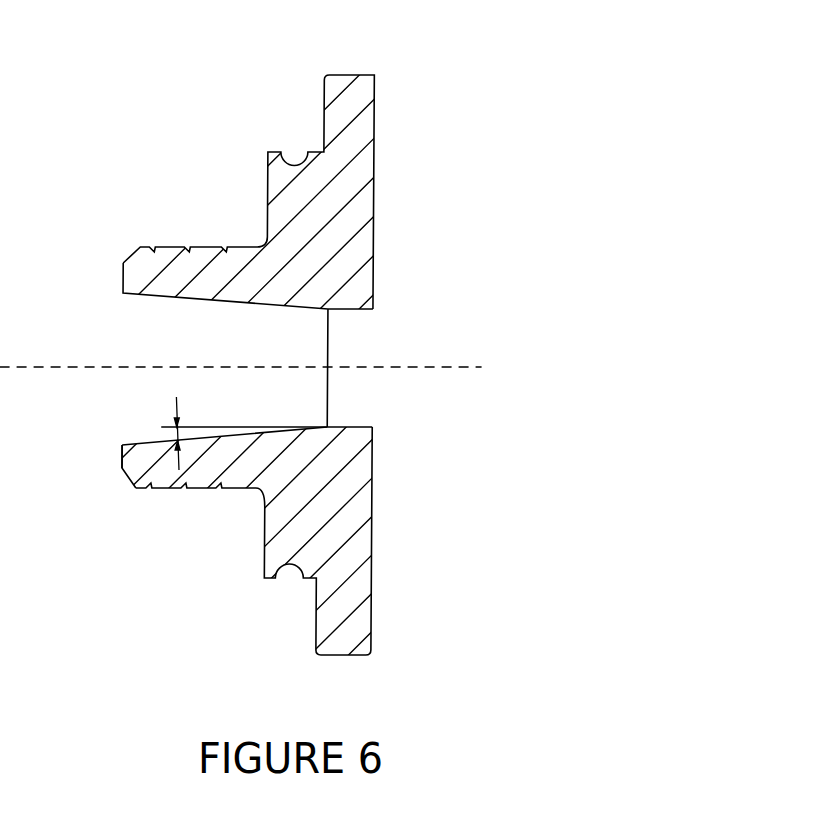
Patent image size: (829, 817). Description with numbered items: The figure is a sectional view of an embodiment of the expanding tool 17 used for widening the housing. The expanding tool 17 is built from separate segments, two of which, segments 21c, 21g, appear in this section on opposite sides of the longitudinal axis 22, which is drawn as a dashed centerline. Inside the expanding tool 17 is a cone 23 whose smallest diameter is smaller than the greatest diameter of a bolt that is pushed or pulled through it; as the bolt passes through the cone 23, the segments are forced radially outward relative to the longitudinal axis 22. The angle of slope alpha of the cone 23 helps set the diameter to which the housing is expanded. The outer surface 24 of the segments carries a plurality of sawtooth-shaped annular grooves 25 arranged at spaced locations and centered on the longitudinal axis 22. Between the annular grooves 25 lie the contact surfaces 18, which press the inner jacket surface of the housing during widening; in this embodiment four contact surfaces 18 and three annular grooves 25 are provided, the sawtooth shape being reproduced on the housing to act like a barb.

The expanding tool 17 is at (414, 360).
The contact surfaces 18 is at (243, 493).
The separate segment 21c is at (343, 517).
The separate segment 21g is at (343, 167).
The longitudinal axis 22 is at (430, 367).
The cone 23 is at (173, 298).
The outer surface 24 is at (139, 491).
The annular grooves 25 is at (229, 247).